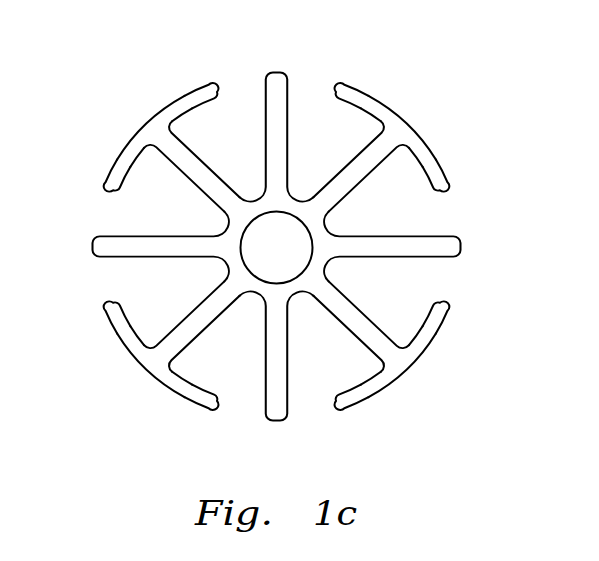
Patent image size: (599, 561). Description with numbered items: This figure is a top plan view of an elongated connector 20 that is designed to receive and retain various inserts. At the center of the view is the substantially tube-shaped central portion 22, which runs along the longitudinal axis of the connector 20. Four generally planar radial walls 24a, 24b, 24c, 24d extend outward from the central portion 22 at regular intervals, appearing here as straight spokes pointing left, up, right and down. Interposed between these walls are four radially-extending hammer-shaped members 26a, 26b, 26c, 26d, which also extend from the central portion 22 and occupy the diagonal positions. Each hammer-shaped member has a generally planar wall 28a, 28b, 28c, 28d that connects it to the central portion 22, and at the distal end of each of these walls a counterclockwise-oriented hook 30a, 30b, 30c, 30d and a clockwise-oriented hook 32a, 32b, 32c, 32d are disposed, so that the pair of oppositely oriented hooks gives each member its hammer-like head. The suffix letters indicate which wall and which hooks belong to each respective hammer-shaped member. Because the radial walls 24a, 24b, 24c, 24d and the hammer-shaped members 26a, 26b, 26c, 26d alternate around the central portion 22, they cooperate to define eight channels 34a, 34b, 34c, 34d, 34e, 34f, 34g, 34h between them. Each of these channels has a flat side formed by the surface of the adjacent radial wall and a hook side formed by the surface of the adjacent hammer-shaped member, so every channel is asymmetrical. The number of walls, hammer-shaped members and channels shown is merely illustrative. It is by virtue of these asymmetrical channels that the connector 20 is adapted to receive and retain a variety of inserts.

The connector 20 is at (401, 51).
The central portion 22 is at (308, 236).
The radial wall 24a is at (93, 248).
The radial wall 24b is at (278, 71).
The radial wall 24c is at (462, 248).
The radial wall 24d is at (278, 421).
The hammer-shaped member 26a is at (125, 109).
The hammer-shaped member 26b is at (426, 109).
The hammer-shaped member 26c is at (426, 386).
The hammer-shaped member 26d is at (125, 385).
The wall 28a is at (208, 172).
The wall 28b is at (346, 172).
The wall 28c is at (353, 316).
The wall 28d is at (197, 316).
The counterclockwise-oriented hook 30a is at (110, 194).
The counterclockwise-oriented hook 30b is at (335, 85).
The counterclockwise-oriented hook 30c is at (448, 300).
The counterclockwise-oriented hook 30d is at (213, 408).
The clockwise-oriented hook 32a is at (218, 80).
The clockwise-oriented hook 32b is at (447, 196).
The clockwise-oriented hook 32c is at (335, 408).
The clockwise-oriented hook 32d is at (105, 299).
The channel 34a is at (128, 222).
The channel 34b is at (250, 99).
The channel 34c is at (300, 98).
The channel 34d is at (424, 222).
The channel 34e is at (424, 272).
The channel 34f is at (300, 398).
The channel 34g is at (250, 397).
The channel 34h is at (128, 273).